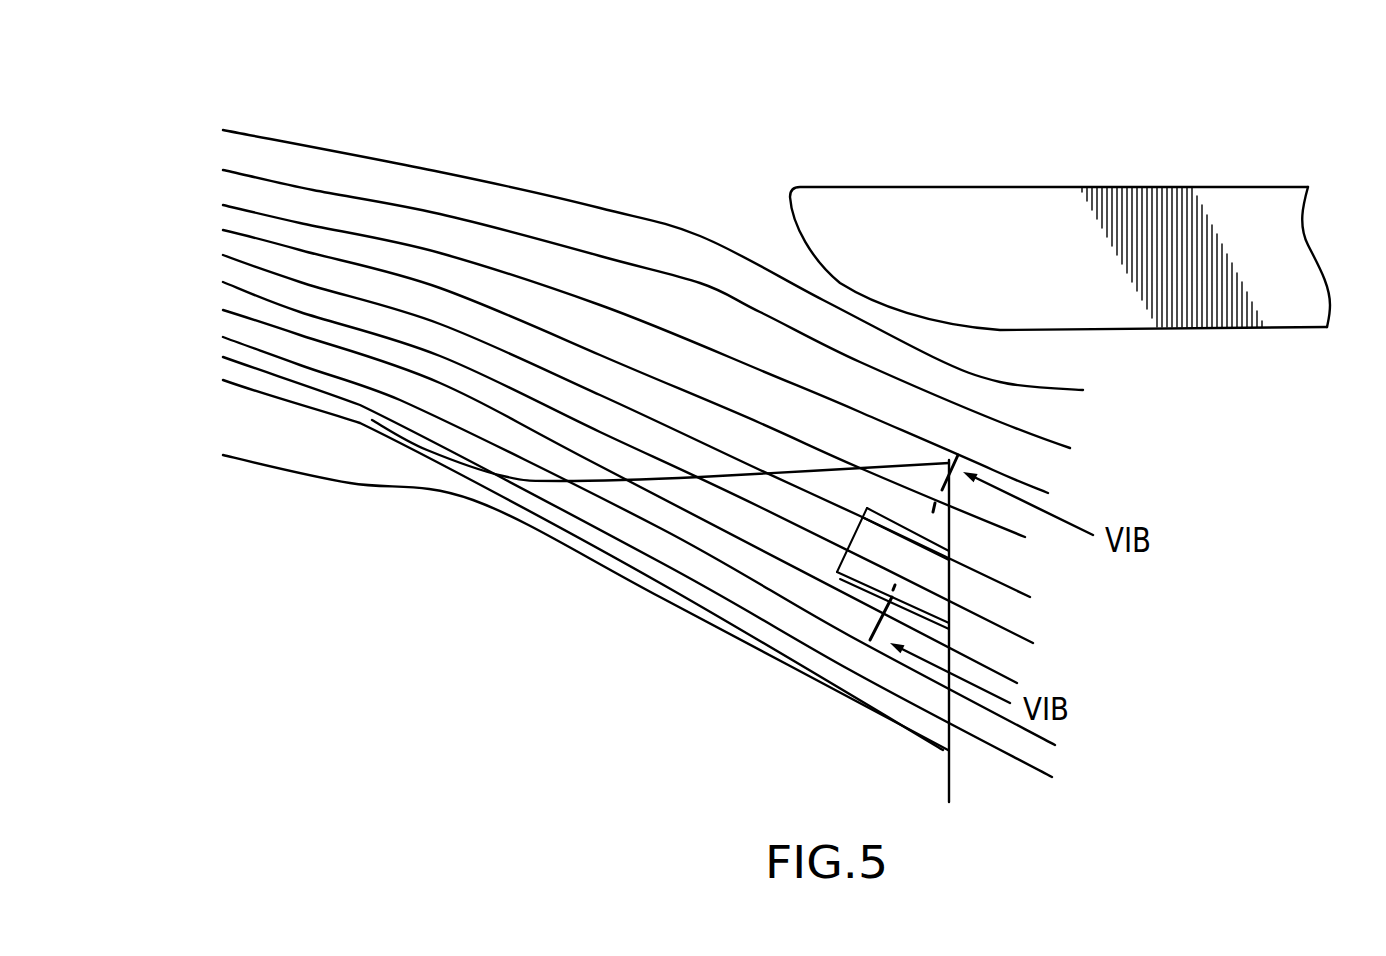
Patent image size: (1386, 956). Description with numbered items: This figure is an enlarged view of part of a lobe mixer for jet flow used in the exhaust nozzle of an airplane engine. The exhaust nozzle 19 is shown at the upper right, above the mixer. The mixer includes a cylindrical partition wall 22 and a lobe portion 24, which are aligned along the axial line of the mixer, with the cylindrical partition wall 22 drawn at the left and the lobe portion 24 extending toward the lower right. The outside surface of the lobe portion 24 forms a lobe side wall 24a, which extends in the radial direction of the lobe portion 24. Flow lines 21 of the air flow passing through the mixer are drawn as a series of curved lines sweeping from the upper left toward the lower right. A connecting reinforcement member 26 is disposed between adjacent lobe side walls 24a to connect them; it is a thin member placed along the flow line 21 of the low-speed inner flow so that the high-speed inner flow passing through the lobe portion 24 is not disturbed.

The exhaust nozzle 19 is at (1043, 213).
The flow lines of fluid 21 is at (527, 172).
The cylindrical partition wall 22 is at (303, 447).
The lobe portion 24 is at (696, 638).
The lobe side wall 24a is at (812, 635).
The connecting reinforcement member 26 is at (935, 574).